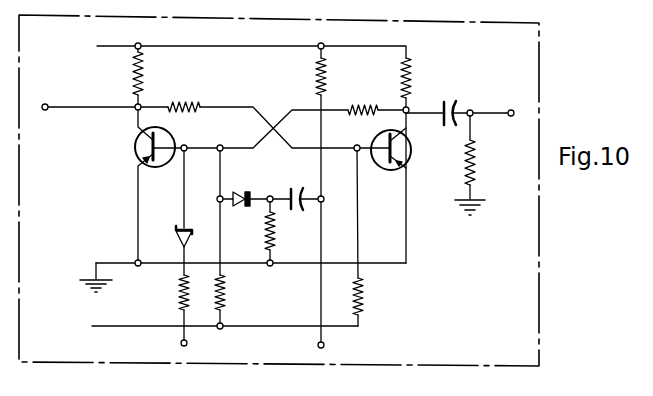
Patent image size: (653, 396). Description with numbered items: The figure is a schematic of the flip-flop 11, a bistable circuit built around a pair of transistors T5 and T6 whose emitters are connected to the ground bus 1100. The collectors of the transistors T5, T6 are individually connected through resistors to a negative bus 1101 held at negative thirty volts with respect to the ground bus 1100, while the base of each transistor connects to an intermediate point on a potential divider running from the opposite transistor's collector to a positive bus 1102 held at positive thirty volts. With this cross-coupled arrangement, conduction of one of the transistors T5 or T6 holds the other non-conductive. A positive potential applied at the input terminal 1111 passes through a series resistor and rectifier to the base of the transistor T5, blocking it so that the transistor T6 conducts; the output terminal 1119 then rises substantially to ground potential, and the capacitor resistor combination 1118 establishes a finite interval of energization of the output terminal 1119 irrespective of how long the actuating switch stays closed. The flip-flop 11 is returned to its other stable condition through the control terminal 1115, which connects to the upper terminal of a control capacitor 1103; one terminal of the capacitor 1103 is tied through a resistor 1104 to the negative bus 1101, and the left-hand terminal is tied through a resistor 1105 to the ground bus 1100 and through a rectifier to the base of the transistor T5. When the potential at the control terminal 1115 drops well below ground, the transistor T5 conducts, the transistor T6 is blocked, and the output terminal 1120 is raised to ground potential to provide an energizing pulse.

The flip-flop 11 is at (539, 80).
The negative bus 1101 is at (274, 46).
The positive bus 1102 is at (245, 326).
The control capacitor 1103 is at (296, 190).
The resistor 1104 is at (318, 82).
The resistor 1105 is at (266, 232).
The ground bus 1100 is at (114, 262).
The input terminal 1111 is at (181, 343).
The control terminal 1115 is at (325, 345).
The capacitor resistor combination 1118 is at (468, 118).
The output terminal 1119 is at (511, 110).
The output terminal 1120 is at (48, 106).
The transistor T5 is at (134, 148).
The transistor T6 is at (410, 151).